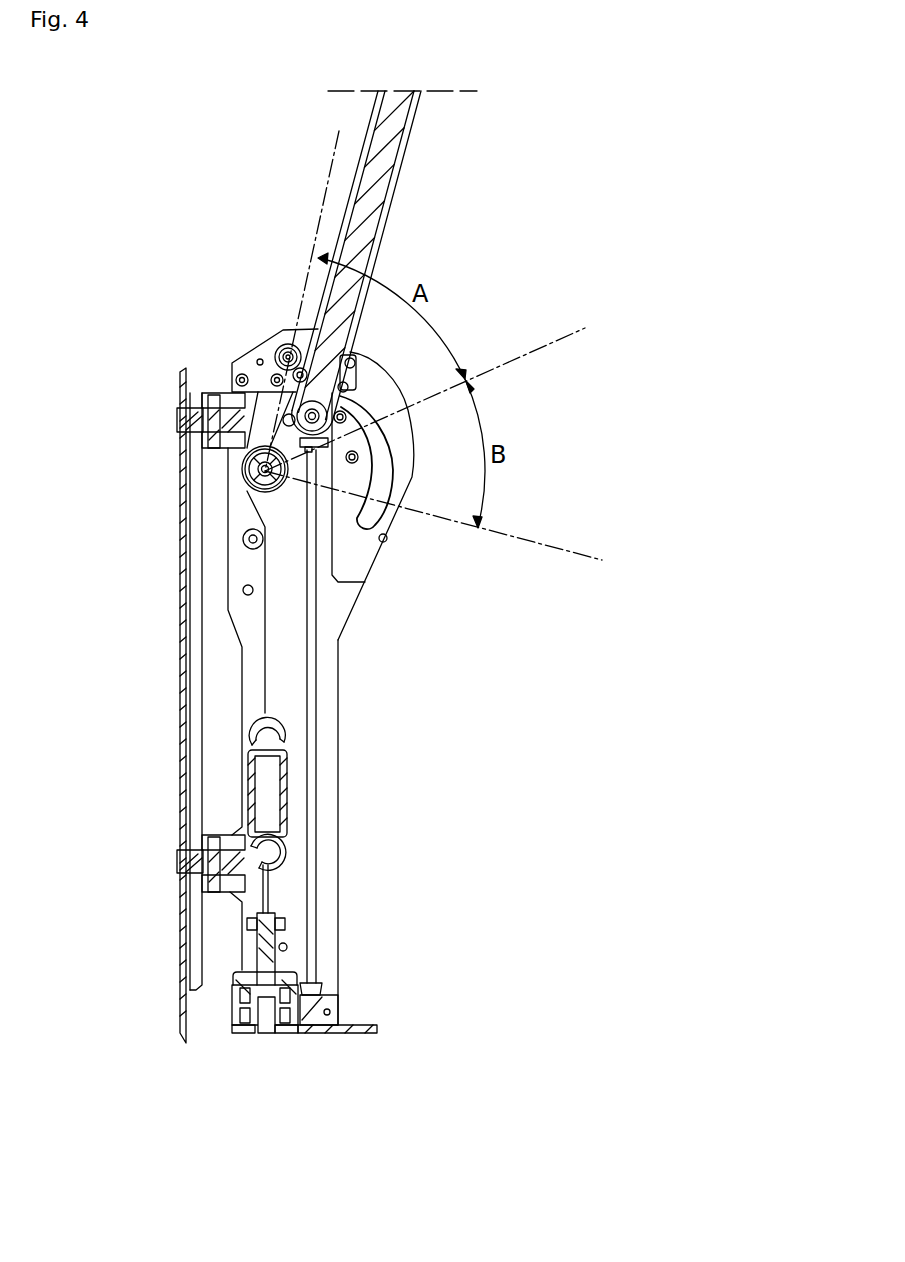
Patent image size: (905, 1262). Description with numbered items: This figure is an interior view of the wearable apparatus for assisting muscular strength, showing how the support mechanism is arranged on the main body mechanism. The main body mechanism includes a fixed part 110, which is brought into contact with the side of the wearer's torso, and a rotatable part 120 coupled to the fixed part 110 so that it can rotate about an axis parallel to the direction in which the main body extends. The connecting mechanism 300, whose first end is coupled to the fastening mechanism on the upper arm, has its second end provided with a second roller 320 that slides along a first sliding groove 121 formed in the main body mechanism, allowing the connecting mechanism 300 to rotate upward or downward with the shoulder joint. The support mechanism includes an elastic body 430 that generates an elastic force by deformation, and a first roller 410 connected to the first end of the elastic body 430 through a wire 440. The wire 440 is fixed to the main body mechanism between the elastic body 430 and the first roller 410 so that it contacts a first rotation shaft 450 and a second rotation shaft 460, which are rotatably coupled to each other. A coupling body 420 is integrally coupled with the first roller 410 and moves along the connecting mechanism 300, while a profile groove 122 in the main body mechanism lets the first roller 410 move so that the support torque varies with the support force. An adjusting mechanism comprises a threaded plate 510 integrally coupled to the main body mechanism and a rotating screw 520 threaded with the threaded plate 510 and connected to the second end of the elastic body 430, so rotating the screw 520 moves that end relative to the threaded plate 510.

The connecting mechanism 300 is at (390, 203).
The first roller 410 is at (283, 351).
The coupling body 420 is at (358, 350).
The second roller 320 is at (238, 362).
The first rotation shaft 450 is at (243, 465).
The second rotation shaft 460 is at (243, 539).
The wire 440 is at (265, 668).
The elastic body 430 is at (248, 772).
The profile groove 122 is at (385, 459).
The first sliding groove 121 is at (315, 855).
The rotatable part 120 is at (340, 928).
The threaded plate 510 is at (235, 975).
The rotating screw 520 is at (272, 1034).
The fixed part 110 is at (182, 1040).